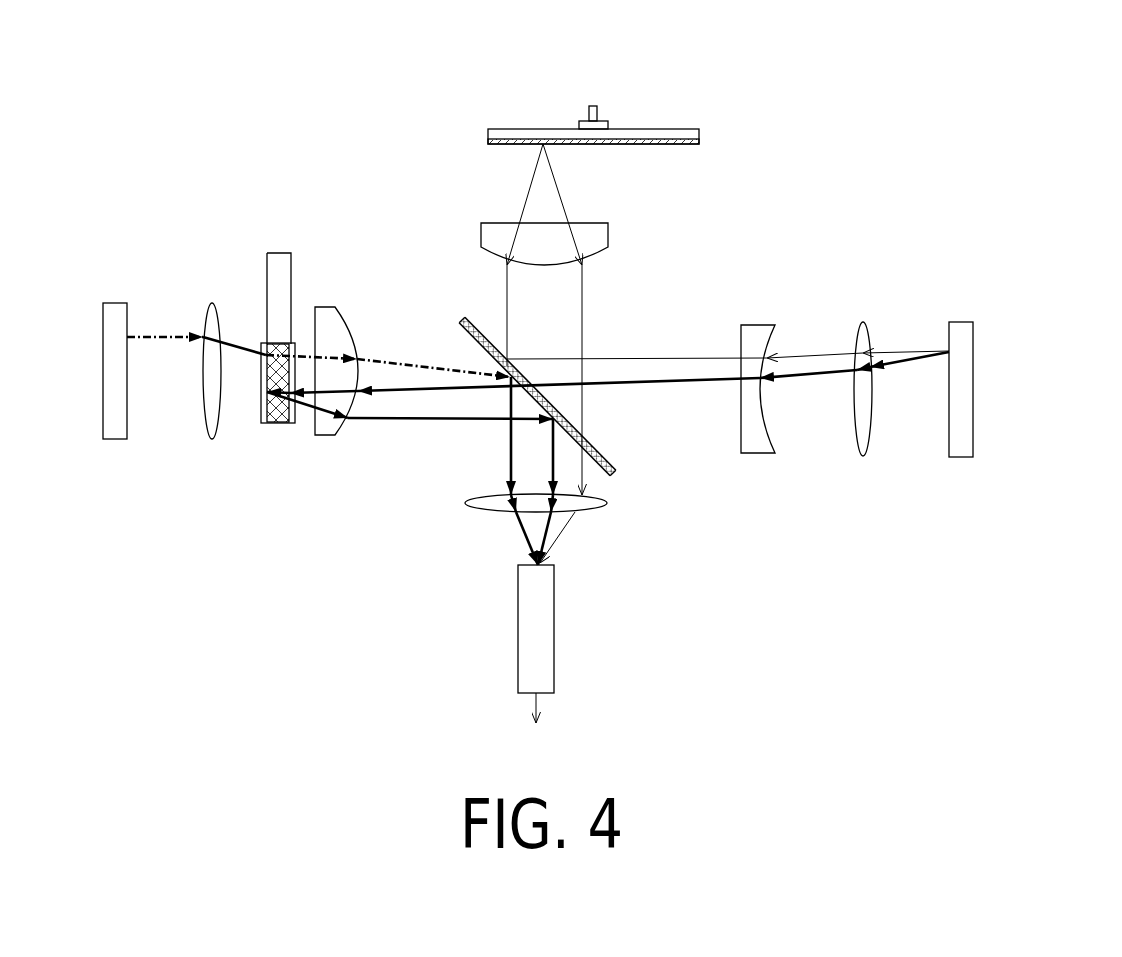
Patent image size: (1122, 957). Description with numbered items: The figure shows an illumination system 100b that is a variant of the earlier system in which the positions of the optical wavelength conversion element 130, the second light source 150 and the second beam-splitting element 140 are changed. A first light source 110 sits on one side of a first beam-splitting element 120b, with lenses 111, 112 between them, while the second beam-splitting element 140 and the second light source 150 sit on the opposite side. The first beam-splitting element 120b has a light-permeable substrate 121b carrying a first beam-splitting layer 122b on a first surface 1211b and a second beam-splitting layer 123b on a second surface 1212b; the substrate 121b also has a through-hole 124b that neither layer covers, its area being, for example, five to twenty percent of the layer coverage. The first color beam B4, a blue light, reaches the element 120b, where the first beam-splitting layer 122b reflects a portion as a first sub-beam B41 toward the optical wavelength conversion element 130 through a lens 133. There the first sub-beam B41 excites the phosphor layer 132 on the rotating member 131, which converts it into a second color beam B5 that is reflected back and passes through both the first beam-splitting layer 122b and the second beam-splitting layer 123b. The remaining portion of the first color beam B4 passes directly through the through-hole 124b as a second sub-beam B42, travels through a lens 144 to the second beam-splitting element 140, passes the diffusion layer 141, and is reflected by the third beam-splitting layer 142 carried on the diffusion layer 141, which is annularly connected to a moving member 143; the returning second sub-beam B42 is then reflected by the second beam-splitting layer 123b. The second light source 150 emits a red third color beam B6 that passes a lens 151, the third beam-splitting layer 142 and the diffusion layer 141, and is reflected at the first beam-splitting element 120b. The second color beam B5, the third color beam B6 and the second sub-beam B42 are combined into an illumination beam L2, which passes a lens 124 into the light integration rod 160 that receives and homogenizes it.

The illumination system 100b is at (237, 98).
The first light source 110 is at (963, 333).
The lens 111 is at (862, 330).
The lens 112 is at (760, 332).
The first color beam B4 is at (913, 345).
The first beam-splitting element 120b is at (630, 462).
The substrate 121b is at (610, 474).
The first beam-splitting layer 122b is at (487, 338).
The second beam-splitting layer 123b is at (495, 360).
The first surface 1211b is at (608, 465).
The second surface 1212b is at (600, 447).
The lens 124 is at (478, 505).
The through-hole 124b is at (530, 398).
The optical wavelength conversion element 130 is at (713, 130).
The rotating member 131 is at (658, 133).
The phosphor layer 132 is at (681, 145).
The lens 133 is at (603, 235).
The second color beam B5 is at (558, 165).
The first sub-beam B41 is at (503, 281).
The second sub-beam B42 is at (388, 388).
The second beam-splitting element 140 is at (237, 430).
The diffusion layer 141 is at (280, 424).
The third beam-splitting layer 142 is at (262, 423).
The moving member 143 is at (288, 270).
The lens 144 is at (328, 320).
The second light source 150 is at (113, 310).
The lens 151 is at (212, 315).
The third color beam B6 is at (152, 340).
The light integration rod 160 is at (538, 607).
The illumination beam L2 is at (540, 705).